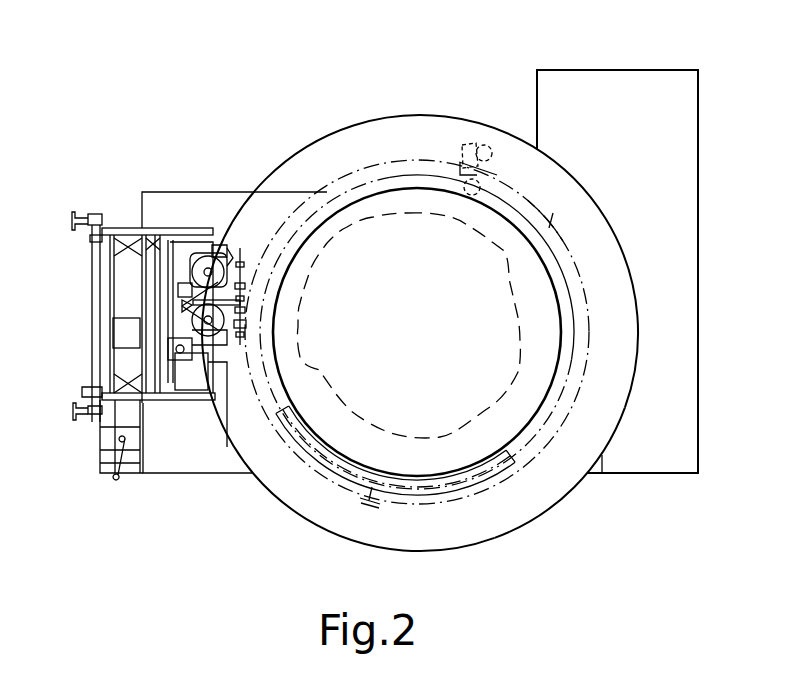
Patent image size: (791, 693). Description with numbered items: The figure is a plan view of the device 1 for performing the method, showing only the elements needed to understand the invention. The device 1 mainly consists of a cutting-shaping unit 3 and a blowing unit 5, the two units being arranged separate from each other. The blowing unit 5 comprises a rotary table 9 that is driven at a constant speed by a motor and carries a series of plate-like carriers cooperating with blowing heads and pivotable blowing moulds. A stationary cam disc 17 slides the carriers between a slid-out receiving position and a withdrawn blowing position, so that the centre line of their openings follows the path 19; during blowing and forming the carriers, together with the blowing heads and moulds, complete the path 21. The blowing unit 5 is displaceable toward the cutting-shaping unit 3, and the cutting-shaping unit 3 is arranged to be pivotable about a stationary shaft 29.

The device 1 is at (706, 73).
The cutting-shaping unit 3 is at (194, 150).
The blowing unit 5 is at (302, 134).
The rotary table 9 is at (541, 514).
The stationary cam disc 17 is at (517, 367).
The path 19 is at (572, 208).
The path 21 is at (576, 350).
The stationary shaft 29 is at (97, 265).